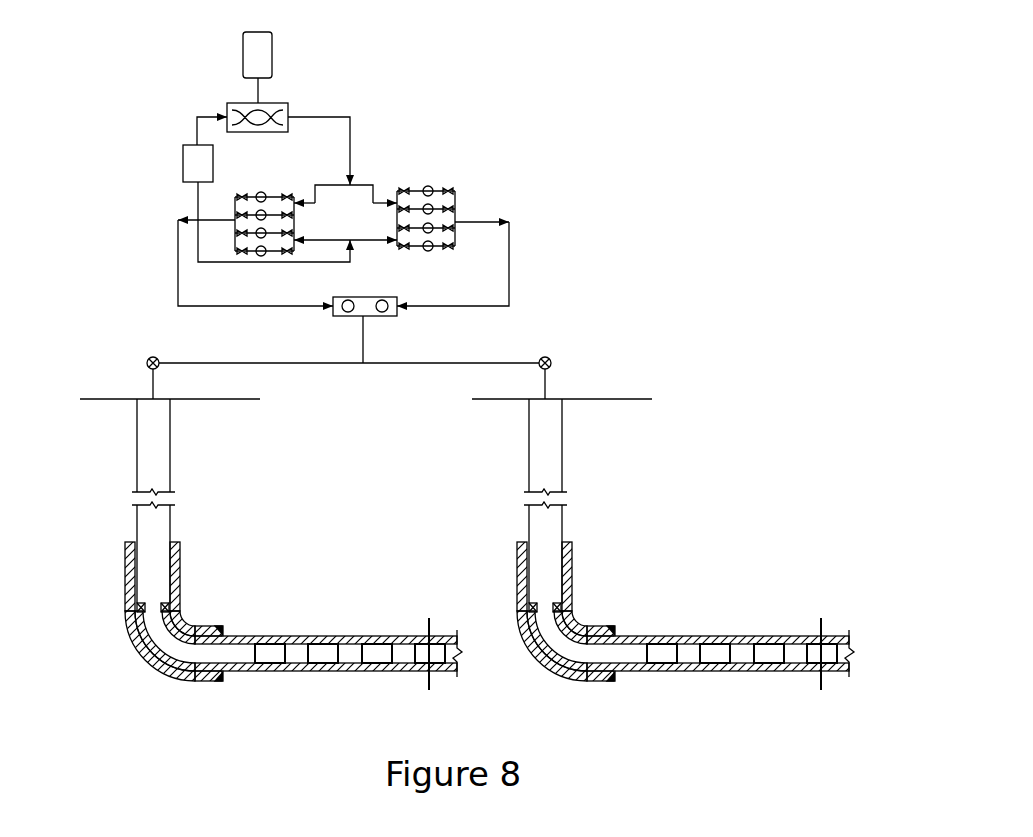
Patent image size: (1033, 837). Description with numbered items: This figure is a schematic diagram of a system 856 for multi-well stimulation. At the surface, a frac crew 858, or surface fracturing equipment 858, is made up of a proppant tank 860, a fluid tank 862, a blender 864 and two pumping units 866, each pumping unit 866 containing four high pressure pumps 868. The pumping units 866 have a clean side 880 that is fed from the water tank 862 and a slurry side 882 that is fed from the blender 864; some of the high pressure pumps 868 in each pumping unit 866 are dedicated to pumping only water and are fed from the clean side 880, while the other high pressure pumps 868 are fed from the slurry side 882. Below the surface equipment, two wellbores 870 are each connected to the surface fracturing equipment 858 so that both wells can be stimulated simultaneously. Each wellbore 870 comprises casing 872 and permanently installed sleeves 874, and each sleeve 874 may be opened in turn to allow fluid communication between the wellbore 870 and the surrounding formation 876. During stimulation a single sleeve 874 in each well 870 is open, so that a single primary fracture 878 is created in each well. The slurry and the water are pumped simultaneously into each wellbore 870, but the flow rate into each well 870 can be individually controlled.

The system 856 is at (527, 100).
The frac crew 858 is at (175, 98).
The proppant tank 860 is at (273, 50).
The fluid tank 862 is at (183, 158).
The blender 864 is at (289, 108).
The pumping unit 866 is at (303, 187).
The high pressure pump 868 is at (261, 256).
The wellbore 870 is at (132, 383).
The casing 872 is at (233, 673).
The sleeve 874 is at (283, 640).
The formation 876 is at (341, 617).
The primary fracture 878 is at (429, 618).
The clean side 880 is at (197, 243).
The slurry side 882 is at (351, 127).